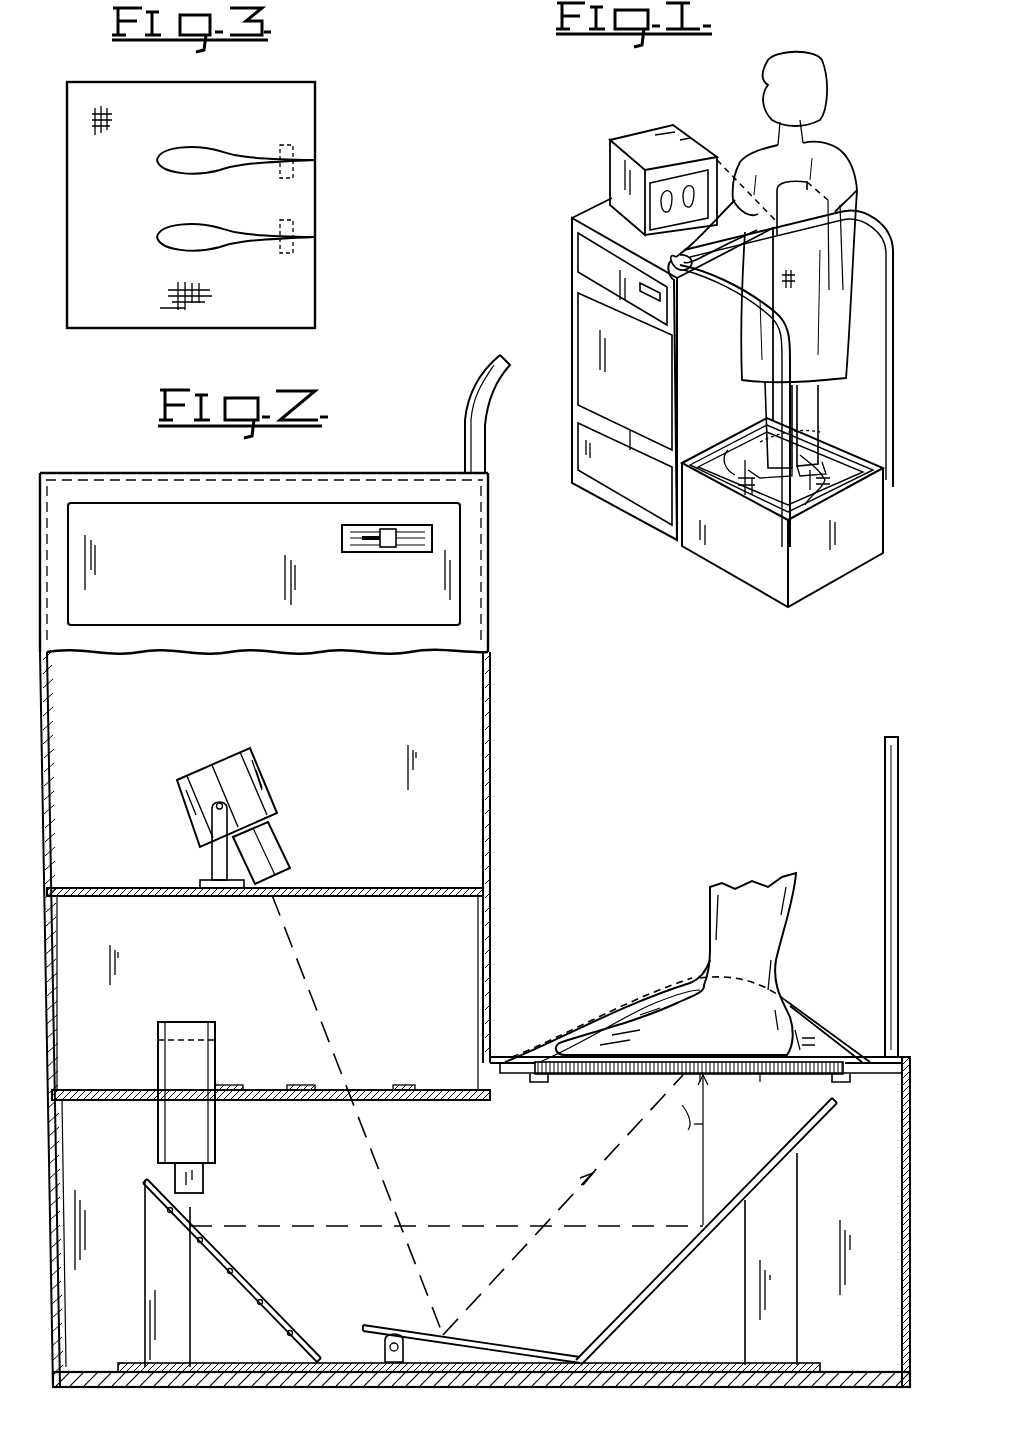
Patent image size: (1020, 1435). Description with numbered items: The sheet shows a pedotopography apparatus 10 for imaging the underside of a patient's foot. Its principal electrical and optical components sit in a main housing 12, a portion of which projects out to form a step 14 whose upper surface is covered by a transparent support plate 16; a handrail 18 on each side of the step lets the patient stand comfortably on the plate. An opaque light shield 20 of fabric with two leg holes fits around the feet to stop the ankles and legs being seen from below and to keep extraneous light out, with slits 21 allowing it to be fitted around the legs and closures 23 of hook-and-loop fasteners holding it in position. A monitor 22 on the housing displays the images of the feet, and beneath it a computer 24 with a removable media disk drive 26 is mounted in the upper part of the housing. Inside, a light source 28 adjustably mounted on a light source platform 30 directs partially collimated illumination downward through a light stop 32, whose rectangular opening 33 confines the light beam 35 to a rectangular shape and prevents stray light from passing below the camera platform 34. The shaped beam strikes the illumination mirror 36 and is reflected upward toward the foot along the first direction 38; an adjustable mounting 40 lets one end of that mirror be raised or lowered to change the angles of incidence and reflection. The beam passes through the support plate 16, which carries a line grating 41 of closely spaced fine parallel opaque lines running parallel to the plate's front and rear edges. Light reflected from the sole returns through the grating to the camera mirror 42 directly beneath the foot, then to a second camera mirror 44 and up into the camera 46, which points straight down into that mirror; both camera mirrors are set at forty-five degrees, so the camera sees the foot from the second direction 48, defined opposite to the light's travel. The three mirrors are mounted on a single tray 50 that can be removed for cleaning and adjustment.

In FIG. 1, the pedotopography apparatus 10 is at (560, 257).
In FIG. 2, the pedotopography apparatus 10 is at (110, 460).
In FIG. 1, the main housing 12 is at (630, 416).
In FIG. 2, the main housing 12 is at (490, 784).
In FIG. 1, the step 14 is at (872, 526).
In FIG. 2, the step 14 is at (900, 1100).
In FIG. 1, the transparent support plate 16 is at (822, 445).
In FIG. 2, the transparent support plate 16 is at (583, 1089).
In FIG. 1, the handrail 18 is at (893, 240).
In FIG. 2, the handrail 18 is at (885, 797).
In FIG. 3, the opaque light shield 20 is at (257, 100).
In FIG. 1, the opaque light shield 20 is at (730, 475).
In FIG. 2, the opaque light shield 20 is at (587, 1020).
In FIG. 3, the slits 21 is at (243, 233).
In FIG. 1, the slits 21 is at (838, 476).
In FIG. 2, the slits 21 is at (808, 1022).
In FIG. 1, the monitor 22 is at (612, 162).
In FIG. 3, the closures 23 is at (280, 148).
In FIG. 1, the computer 24 is at (592, 225).
In FIG. 2, the computer 24 is at (154, 566).
In FIG. 1, the removable media disk drive 26 is at (648, 296).
In FIG. 2, the removable media disk drive 26 is at (342, 538).
In FIG. 2, the light source 28 is at (250, 792).
In FIG. 2, the light source platform 30 is at (346, 888).
In FIG. 2, the light stop 32 is at (410, 1088).
In FIG. 2, the rectangular opening 33 is at (336, 1089).
In FIG. 2, the camera platform 34 is at (92, 1094).
In FIG. 2, the light beam 35 is at (394, 1204).
In FIG. 2, the illumination mirror 36 is at (505, 1340).
In FIG. 2, the first direction 38 is at (575, 1190).
In FIG. 2, the adjustable mounting 40 is at (374, 1353).
In FIG. 2, the line grating 41 is at (751, 1078).
In FIG. 2, the camera mirror 42 is at (672, 1250).
In FIG. 2, the second camera mirror 44 is at (212, 1248).
In FIG. 2, the camera 46 is at (190, 1152).
In FIG. 2, the second direction 48 is at (703, 1153).
In FIG. 2, the tray 50 is at (680, 1363).